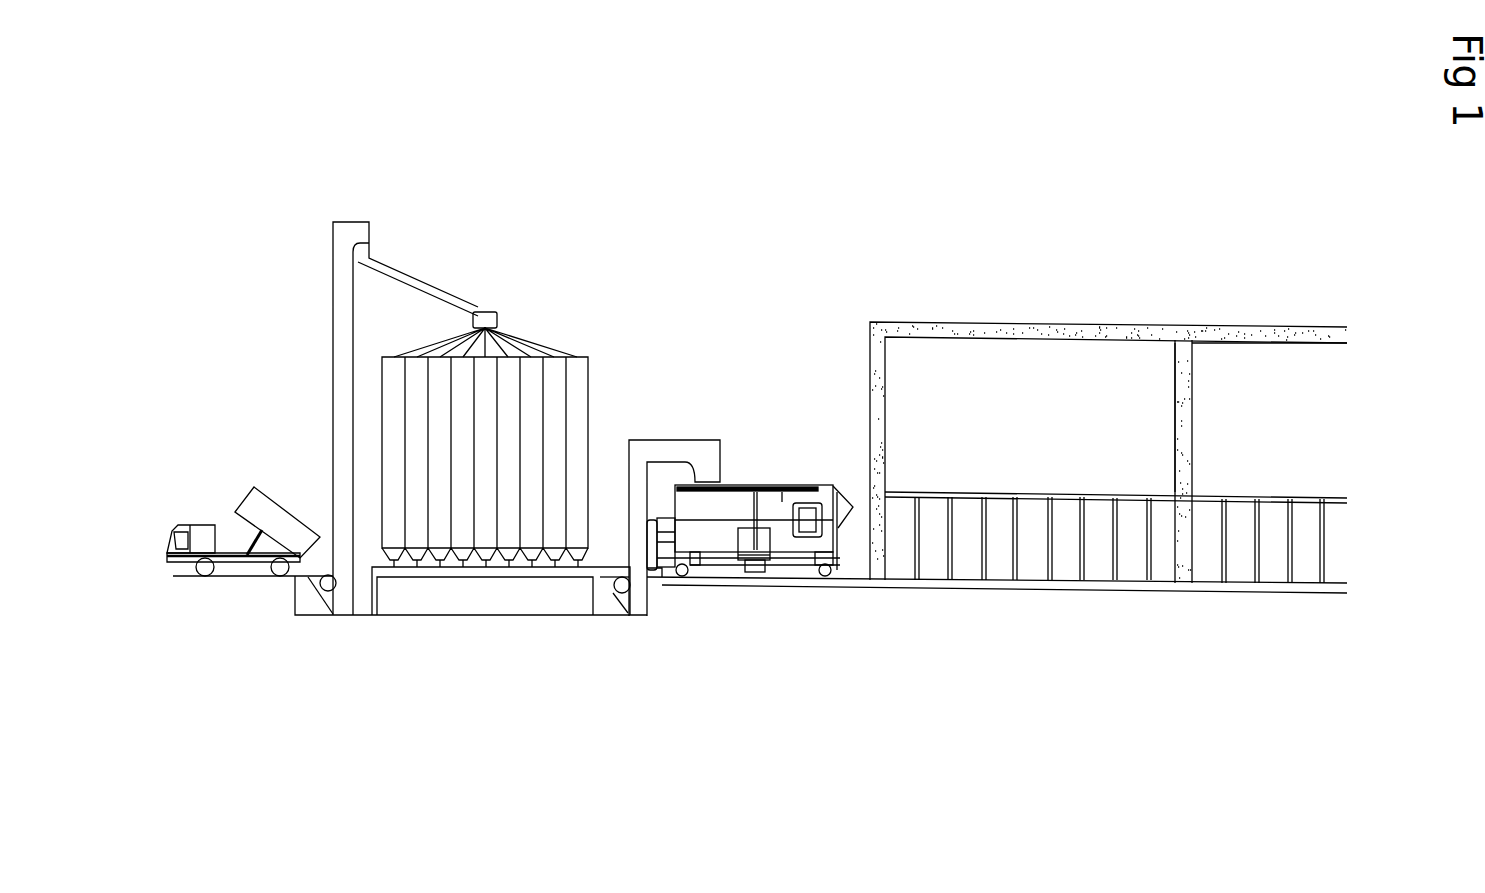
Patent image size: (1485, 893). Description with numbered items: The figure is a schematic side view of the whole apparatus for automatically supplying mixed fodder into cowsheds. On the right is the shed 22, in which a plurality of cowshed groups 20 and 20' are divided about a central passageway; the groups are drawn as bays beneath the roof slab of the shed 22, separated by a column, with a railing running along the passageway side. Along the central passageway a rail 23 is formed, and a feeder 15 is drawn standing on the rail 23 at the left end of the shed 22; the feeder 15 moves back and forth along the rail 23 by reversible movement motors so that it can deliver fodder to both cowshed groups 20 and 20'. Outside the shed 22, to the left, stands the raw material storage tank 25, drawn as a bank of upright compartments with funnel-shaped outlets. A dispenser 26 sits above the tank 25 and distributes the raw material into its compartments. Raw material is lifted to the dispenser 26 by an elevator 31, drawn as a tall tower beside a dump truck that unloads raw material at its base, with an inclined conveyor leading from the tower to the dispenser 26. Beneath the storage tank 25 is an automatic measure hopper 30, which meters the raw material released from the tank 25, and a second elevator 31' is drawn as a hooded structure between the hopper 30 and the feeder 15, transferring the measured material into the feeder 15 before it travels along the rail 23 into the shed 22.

The elevator 31 is at (433, 418).
The dispenser 26 is at (485, 313).
The raw material storage tank 25 is at (530, 378).
The automatic measure hopper 30 is at (487, 558).
The elevator 31' is at (674, 444).
The feeder 15 is at (785, 502).
The rail 23 is at (1090, 587).
The cowshed group 20 is at (1108, 393).
The shed 22 is at (1150, 283).
The cowshed group 20' is at (1269, 283).